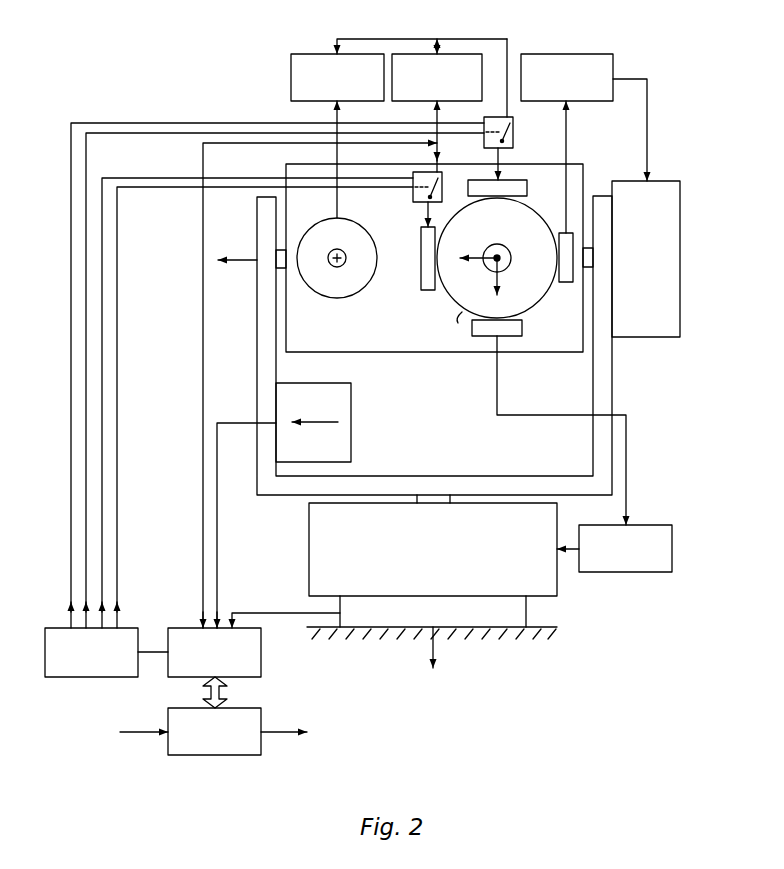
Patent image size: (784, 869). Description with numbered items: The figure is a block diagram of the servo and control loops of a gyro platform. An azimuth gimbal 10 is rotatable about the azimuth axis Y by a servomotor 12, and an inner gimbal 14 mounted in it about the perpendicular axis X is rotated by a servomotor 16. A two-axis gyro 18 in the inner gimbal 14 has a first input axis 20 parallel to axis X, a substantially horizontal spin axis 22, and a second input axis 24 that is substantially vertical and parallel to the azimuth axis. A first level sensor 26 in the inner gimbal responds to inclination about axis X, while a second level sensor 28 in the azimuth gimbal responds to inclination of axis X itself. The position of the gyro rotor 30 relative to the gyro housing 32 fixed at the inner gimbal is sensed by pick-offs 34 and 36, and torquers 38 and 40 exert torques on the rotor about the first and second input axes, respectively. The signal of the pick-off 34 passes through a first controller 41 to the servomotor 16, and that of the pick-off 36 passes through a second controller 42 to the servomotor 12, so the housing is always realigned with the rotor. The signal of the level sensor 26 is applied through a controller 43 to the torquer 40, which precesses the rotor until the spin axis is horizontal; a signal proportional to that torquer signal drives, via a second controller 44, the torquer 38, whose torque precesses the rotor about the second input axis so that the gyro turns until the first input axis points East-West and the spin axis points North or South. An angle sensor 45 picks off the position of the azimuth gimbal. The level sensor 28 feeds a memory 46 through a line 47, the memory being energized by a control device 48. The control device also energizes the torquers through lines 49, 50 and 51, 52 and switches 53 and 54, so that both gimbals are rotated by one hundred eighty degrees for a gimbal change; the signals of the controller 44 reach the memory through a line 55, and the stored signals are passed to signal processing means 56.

The azimuth gimbal 10 is at (603, 388).
The servomotor 12 is at (548, 585).
The inner gimbal 14 is at (385, 352).
The servomotor 16 is at (665, 190).
The two-axis gyro 18 is at (458, 282).
The first input axis 20 is at (481, 257).
The spin axis 22 is at (507, 250).
The second input axis 24 is at (502, 281).
The first level sensor 26 is at (323, 286).
The second level sensor 28 is at (351, 447).
The gyro rotor 30 is at (507, 266).
The gyro housing 32 is at (458, 323).
The pick-off 34 is at (567, 205).
The pick-off 36 is at (493, 337).
The torquer 38 is at (421, 265).
The torquer 40 is at (522, 185).
The first controller 41 is at (572, 57).
The second controller 42 is at (662, 562).
The controller 43 is at (291, 85).
The second controller 44 is at (470, 70).
The angle sensor 45 is at (507, 613).
The memory 46 is at (257, 662).
The line 47 is at (218, 540).
The control device 48 is at (65, 667).
The line 49 is at (118, 495).
The line 50 is at (102, 475).
The line 51 is at (83, 462).
The line 52 is at (70, 502).
The switch 53 is at (413, 198).
The switch 54 is at (517, 128).
The line 55 is at (202, 307).
The signal processing means 56 is at (252, 722).